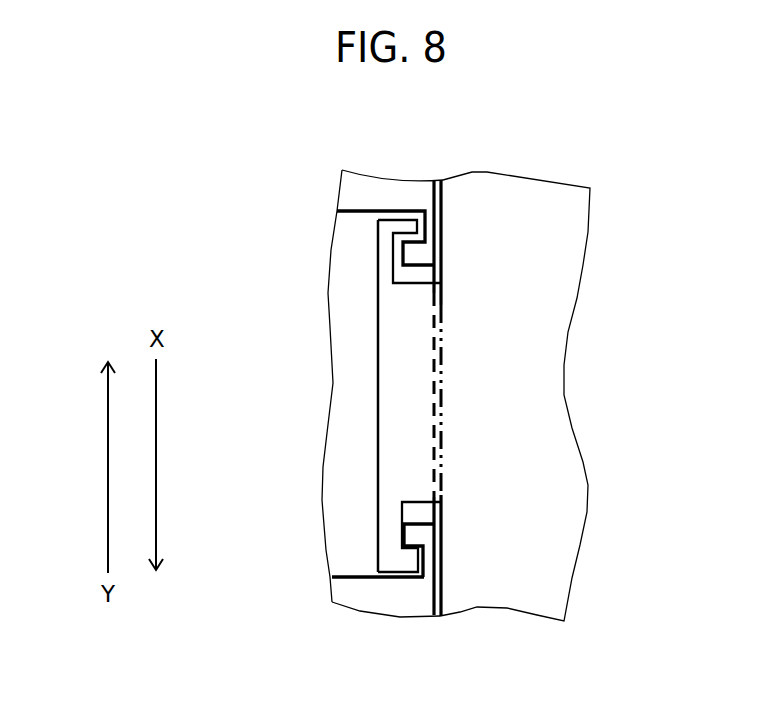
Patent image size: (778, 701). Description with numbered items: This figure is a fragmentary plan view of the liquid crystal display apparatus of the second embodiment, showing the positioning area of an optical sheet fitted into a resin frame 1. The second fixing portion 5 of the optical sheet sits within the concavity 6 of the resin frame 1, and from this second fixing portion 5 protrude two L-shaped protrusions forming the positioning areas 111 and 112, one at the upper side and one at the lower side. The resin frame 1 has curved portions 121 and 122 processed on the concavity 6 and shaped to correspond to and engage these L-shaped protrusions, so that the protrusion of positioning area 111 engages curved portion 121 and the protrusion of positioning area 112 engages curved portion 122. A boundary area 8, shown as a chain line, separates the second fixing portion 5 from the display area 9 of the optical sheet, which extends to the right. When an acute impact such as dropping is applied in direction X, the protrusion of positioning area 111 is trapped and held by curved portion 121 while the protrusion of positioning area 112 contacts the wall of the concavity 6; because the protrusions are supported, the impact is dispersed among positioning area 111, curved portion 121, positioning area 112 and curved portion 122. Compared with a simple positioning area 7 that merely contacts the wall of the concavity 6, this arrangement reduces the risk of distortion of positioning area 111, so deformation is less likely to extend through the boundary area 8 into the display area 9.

The resin frame 1 is at (383, 200).
The second fixing portion 5 is at (397, 428).
The concavity 6 is at (347, 392).
The positioning area 7 is at (392, 579).
The boundary area 8 is at (443, 422).
The display area 9 is at (548, 253).
The positioning area 111 is at (381, 256).
The positioning area 112 is at (390, 544).
The curved portion 121 is at (421, 229).
The curved portion 122 is at (422, 563).